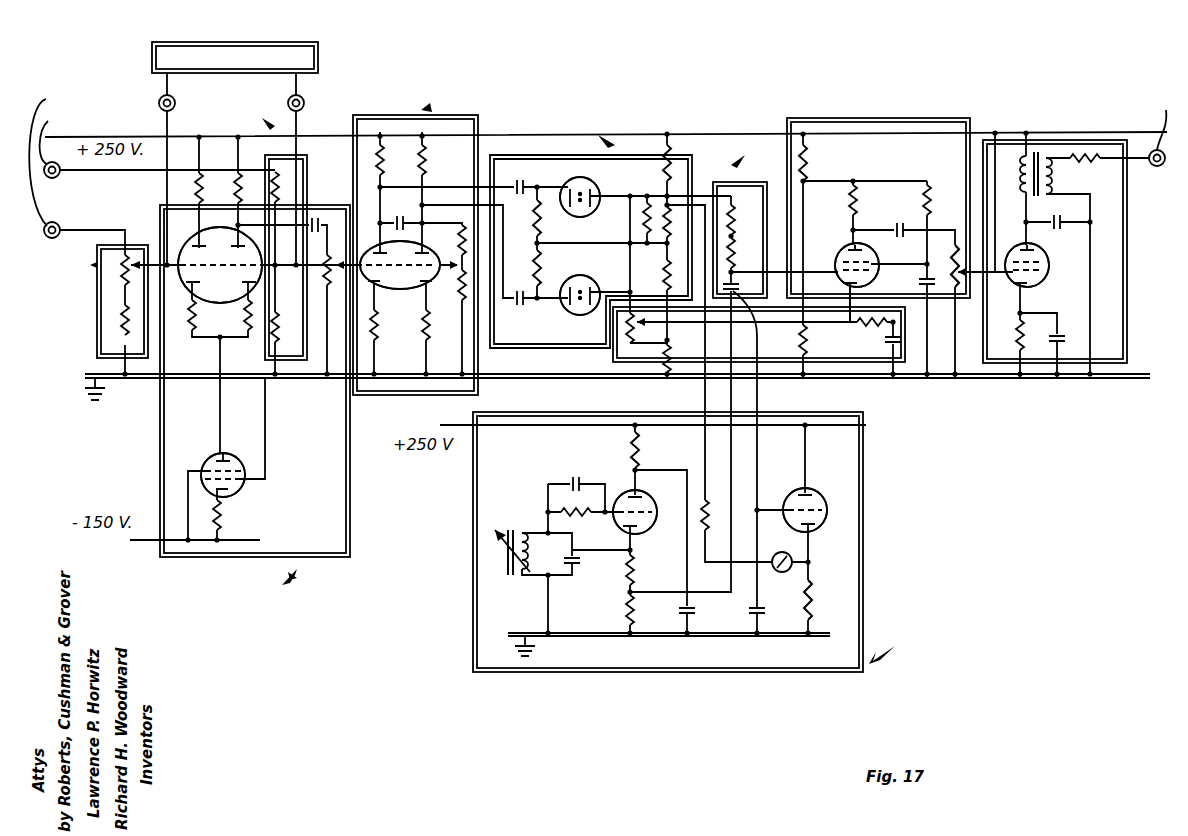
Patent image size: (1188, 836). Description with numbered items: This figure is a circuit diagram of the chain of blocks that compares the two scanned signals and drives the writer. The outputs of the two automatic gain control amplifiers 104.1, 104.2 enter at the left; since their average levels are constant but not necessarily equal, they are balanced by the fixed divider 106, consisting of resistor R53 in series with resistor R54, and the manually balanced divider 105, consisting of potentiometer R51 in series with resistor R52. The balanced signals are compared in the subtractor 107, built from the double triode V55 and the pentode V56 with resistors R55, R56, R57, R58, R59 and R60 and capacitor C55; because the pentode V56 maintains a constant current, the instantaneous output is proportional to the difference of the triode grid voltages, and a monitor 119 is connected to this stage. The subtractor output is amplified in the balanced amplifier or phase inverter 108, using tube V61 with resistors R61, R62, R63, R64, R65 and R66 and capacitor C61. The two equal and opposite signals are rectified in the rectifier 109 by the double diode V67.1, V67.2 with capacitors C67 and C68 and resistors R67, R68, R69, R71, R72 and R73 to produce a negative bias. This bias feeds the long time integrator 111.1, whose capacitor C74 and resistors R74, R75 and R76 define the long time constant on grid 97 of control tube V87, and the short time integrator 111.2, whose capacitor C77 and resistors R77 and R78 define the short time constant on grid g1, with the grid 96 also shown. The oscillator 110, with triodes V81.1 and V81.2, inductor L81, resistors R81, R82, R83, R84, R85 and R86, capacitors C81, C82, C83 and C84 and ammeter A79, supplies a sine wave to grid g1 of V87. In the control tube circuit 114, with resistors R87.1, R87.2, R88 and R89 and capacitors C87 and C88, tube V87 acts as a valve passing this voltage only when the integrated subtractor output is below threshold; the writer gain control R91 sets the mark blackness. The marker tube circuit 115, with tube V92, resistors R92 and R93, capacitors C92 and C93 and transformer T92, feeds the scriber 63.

The monitor 119 is at (235, 57).
The automatic gain control amplifier 104.1 is at (87, 95).
The automatic gain control amplifier 104.2 is at (89, 115).
The scriber 63 is at (1071, 92).
The balanced divider 105 is at (88, 301).
The fixed divider 106 is at (269, 233).
The subtractor 107 is at (255, 405).
The amplifier 108 is at (415, 244).
The rectifier 109 is at (591, 224).
The oscillator 110 is at (702, 542).
The long time integrator 111.1 is at (618, 360).
The short time integrator 111.2 is at (746, 194).
The control tube circuit 114 is at (885, 118).
The marker tube circuit 115 is at (1075, 363).
The potentiometer R51 is at (122, 272).
The resistor R52 is at (122, 326).
The resistor R53 is at (278, 183).
The resistor R54 is at (278, 335).
The resistor R55 is at (195, 186).
The resistor R56 is at (234, 194).
The resistor R57 is at (189, 316).
The resistor R58 is at (227, 315).
The resistor R59 is at (222, 518).
The resistor R60 is at (325, 285).
The capacitor C55 is at (316, 220).
The double triode V55 is at (220, 261).
The pentode V56 is at (246, 482).
The resistor R61 is at (378, 148).
The resistor R62 is at (441, 160).
The resistor R63 is at (392, 325).
The resistor R64 is at (426, 322).
The resistor R65 is at (462, 228).
The resistor R66 is at (462, 300).
The capacitor C61 is at (401, 213).
The double triode V61 is at (400, 277).
The capacitor C67 is at (519, 178).
The capacitor C68 is at (525, 308).
The diode V67.1 is at (575, 180).
The diode V67.2 is at (578, 316).
The resistor R67 is at (559, 222).
The resistor R68 is at (539, 284).
The resistor R69 is at (645, 200).
The resistor R71 is at (670, 160).
The resistor R72 is at (663, 278).
The resistor R73 is at (672, 215).
The resistor R74 is at (628, 342).
The resistor R75 is at (665, 372).
The resistor R76 is at (880, 332).
The resistor R77 is at (734, 210).
The resistor R78 is at (733, 255).
The capacitor C77 is at (740, 290).
The capacitor C74 is at (890, 345).
The resistor R87.1 is at (808, 166).
The resistor R87.2 is at (801, 358).
The resistor R88 is at (873, 200).
The resistor R89 is at (942, 176).
The writer gain control R91 is at (955, 248).
The capacitor C87 is at (880, 221).
The capacitor C88 is at (930, 290).
The control tube V87 is at (853, 243).
The grid g7 97 is at (848, 252).
The grid of tube V87 96 is at (880, 262).
The grid g1 is at (848, 292).
The transformer T92 is at (1054, 174).
The resistor R92 is at (1024, 323).
The resistor R93 is at (1076, 156).
The capacitor C92 is at (1062, 215).
The capacitor C93 is at (1068, 338).
The marker tube V92 is at (1048, 272).
The resistor R81 is at (656, 450).
The resistor R82 is at (634, 578).
The resistor R83 is at (651, 610).
The resistor R84 is at (703, 508).
The resistor R85 is at (788, 600).
The resistor R86 is at (576, 515).
The capacitor C81 is at (696, 612).
The capacitor C82 is at (772, 612).
The capacitor C83 is at (553, 475).
The capacitor C84 is at (590, 568).
The inductor L81 is at (520, 580).
The triode V81.1 is at (622, 490).
The triode V81.2 is at (806, 494).
The ammeter A79 is at (790, 568).